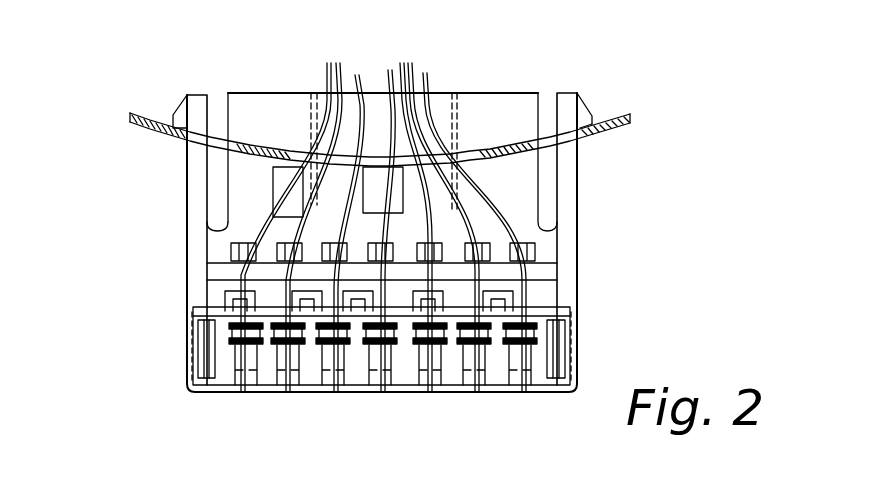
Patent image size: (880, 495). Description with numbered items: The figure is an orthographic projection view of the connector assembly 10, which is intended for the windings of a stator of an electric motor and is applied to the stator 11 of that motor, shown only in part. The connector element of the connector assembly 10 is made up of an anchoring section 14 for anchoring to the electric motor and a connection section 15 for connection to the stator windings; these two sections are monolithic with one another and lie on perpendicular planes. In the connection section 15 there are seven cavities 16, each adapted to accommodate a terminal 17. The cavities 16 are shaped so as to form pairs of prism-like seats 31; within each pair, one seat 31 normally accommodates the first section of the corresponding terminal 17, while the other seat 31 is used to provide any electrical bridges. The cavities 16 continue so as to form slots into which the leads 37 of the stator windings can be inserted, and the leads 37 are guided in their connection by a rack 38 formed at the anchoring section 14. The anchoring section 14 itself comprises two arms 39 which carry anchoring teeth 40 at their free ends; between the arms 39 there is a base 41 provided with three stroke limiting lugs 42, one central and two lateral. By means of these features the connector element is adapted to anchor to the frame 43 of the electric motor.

The connector assembly 10 is at (708, 238).
The stator 11 is at (622, 115).
The anchoring section 14 is at (183, 167).
The connection section 15 is at (455, 402).
The cavities 16 is at (345, 337).
The terminals 17 is at (447, 302).
The prism-like seats 31 is at (197, 333).
The leads 37 is at (207, 283).
The rack 38 is at (205, 227).
The arms 39 is at (575, 158).
The anchoring teeth 40 is at (190, 110).
The base 41 is at (287, 100).
The stroke limiting lugs 42 is at (383, 177).
The frame 43 is at (252, 140).